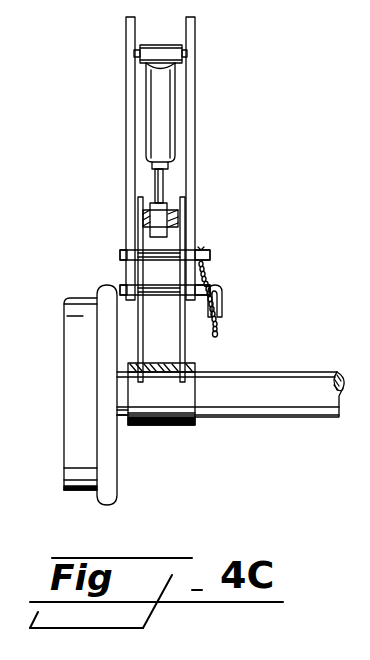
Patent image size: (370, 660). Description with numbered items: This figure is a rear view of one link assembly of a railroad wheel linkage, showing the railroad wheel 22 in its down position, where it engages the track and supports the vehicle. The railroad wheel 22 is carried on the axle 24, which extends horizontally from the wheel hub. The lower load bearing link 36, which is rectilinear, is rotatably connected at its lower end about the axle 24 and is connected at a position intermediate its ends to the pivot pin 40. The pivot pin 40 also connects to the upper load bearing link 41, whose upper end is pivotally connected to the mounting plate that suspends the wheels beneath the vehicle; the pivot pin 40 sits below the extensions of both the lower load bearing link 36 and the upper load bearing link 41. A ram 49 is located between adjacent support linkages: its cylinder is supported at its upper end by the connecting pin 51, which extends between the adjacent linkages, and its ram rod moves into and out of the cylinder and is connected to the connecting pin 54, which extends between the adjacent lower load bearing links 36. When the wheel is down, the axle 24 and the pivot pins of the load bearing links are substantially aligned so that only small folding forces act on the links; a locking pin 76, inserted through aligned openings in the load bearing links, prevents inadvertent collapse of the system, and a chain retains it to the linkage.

The railroad wheel 22 is at (72, 366).
The axle 24 is at (309, 372).
The lower load bearing link 36 is at (187, 346).
The pivot pin 40 is at (211, 255).
The upper load bearing link 41 is at (196, 232).
The ram 49 is at (166, 115).
The connecting pin 51 is at (184, 56).
The connecting pin 54 is at (181, 220).
The locking pin 76 is at (223, 304).